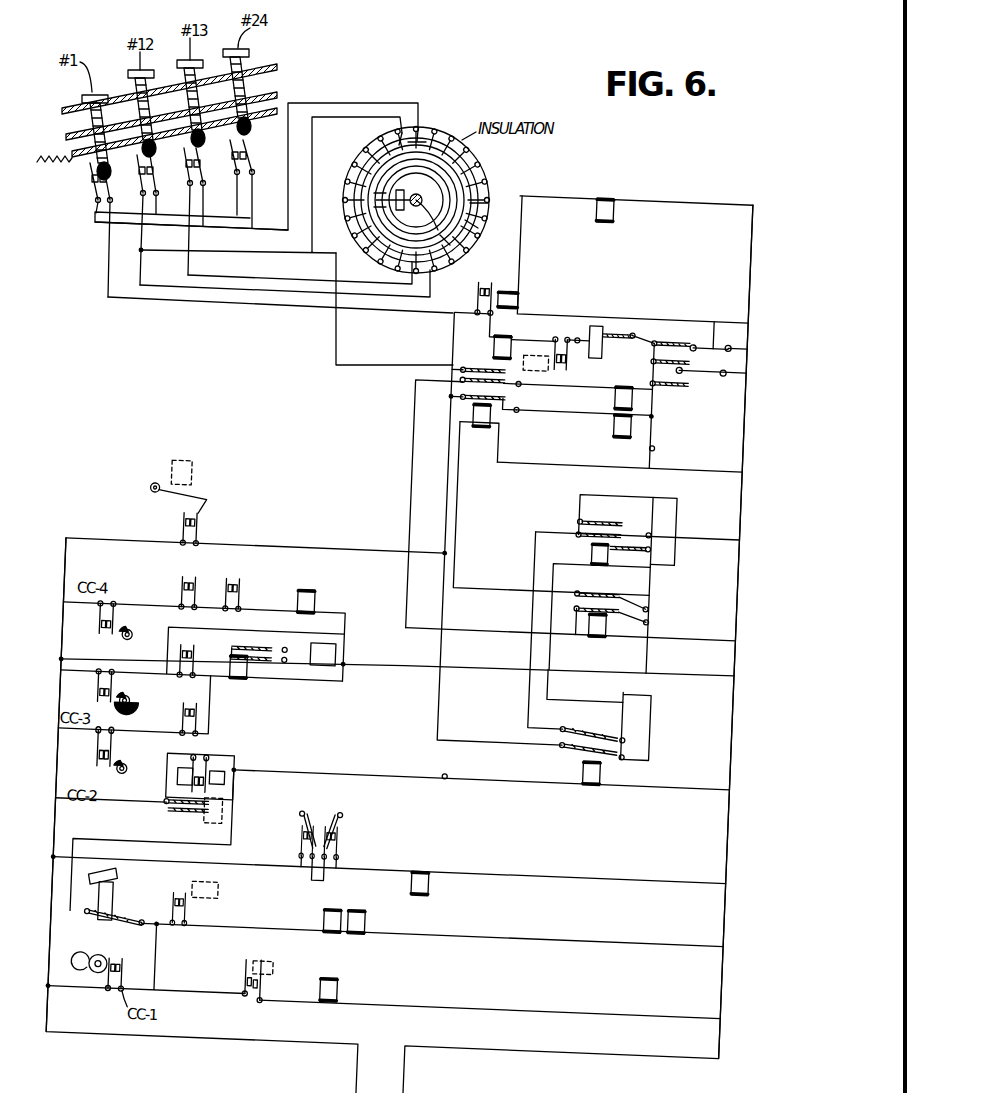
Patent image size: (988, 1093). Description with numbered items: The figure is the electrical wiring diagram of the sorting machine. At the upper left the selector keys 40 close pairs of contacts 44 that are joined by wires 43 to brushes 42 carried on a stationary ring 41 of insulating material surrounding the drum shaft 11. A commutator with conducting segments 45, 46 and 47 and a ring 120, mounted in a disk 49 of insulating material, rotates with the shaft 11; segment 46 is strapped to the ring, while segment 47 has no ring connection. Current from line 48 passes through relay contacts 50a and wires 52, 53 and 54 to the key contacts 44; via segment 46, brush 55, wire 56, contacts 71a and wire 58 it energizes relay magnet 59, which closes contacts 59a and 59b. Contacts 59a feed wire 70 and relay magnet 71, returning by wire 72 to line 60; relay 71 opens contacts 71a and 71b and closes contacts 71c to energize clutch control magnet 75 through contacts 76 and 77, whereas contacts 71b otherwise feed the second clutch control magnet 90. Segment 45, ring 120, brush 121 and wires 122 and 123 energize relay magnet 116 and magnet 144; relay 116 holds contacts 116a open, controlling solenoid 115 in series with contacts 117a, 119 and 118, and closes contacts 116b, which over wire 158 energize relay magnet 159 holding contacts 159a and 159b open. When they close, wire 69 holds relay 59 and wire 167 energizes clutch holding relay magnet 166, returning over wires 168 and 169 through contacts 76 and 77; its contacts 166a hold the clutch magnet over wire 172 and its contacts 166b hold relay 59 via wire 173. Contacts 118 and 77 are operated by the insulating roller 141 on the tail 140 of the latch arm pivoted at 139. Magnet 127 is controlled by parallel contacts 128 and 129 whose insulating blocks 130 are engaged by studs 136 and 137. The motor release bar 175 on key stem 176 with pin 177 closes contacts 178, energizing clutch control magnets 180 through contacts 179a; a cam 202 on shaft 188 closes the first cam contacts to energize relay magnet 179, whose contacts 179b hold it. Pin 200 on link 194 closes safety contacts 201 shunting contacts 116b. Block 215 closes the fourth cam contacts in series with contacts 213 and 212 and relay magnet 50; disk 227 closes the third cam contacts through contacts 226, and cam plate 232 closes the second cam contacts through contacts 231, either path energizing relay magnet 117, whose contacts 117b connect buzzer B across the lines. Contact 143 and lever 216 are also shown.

The drum shaft 11 is at (450, 245).
The selector key 40 is at (90, 118).
The ring of insulating material 41 is at (492, 170).
The brushes 42 is at (372, 152).
The wires 43 is at (358, 105).
The pairs of contacts 44 is at (90, 185).
The conducting segment 45 is at (440, 140).
The conducting segment 46 is at (352, 178).
The conducting segment 47 is at (488, 185).
The line 48 is at (66, 770).
The disk of insulating material 49 is at (411, 122).
The relay magnet 50 is at (190, 468).
The relay contacts 50a is at (199, 522).
The wire 52 is at (358, 538).
The wire 53 is at (445, 423).
The wire 54 is at (178, 300).
The brush 55 is at (388, 209).
The wire 56 is at (375, 365).
The wire 58 is at (409, 490).
The relay magnet 59 is at (595, 614).
The relay contacts 59a is at (648, 581).
The relay contacts 59b is at (650, 597).
The line 60 is at (739, 568).
The wire 69 is at (665, 673).
The wire 70 is at (455, 550).
The relay magnet 71 is at (475, 409).
The relay contacts 71a is at (486, 354).
The relay contacts 71b is at (520, 392).
The relay contacts 71c is at (505, 394).
The wire 72 is at (535, 446).
The clutch control magnet 75 is at (612, 414).
The contacts 76 is at (675, 360).
The contacts 77 is at (676, 338).
The second clutch control magnet 90 is at (626, 372).
The solenoid 115 is at (506, 325).
The relay magnet 116 is at (510, 282).
The relay contacts 116a is at (490, 262).
The relay contacts 116b is at (177, 808).
The relay magnet 117 is at (529, 353).
The relay contacts 117a is at (560, 356).
The relay contacts 117b is at (262, 640).
The contacts 118 is at (668, 320).
The contacts 119 is at (592, 310).
The ring 120 is at (478, 228).
The brush 121 is at (488, 205).
The wire 122 is at (506, 178).
The wire 123 is at (508, 230).
The magnet 127 is at (441, 866).
The pair of contacts 128 is at (312, 832).
The pair of contacts 129 is at (350, 832).
The blocks of insulating material 130 is at (318, 800).
The stud 136 is at (311, 806).
The stud 137 is at (353, 806).
The pivot 139 is at (720, 318).
The tail 140 is at (705, 296).
The insulating roller 141 is at (685, 320).
The contact arm 143 is at (714, 350).
The magnet 144 is at (600, 188).
The wire 158 is at (454, 764).
The relay magnet 159 is at (601, 765).
The relay contacts 159a is at (593, 709).
The relay contacts 159b is at (574, 732).
The clutch holding relay magnet 166 is at (590, 540).
The relay contacts 166a is at (620, 503).
The relay contacts 166b is at (620, 532).
The wire 167 is at (553, 668).
The wire 168 is at (676, 524).
The wire 169 is at (650, 426).
The wire 172 is at (698, 513).
The wire 173 is at (535, 684).
The motor release bar 175 is at (114, 874).
The key stem 176 is at (127, 887).
The pin 177 is at (562, 340).
The contacts 178 is at (135, 918).
The relay magnet 179 is at (214, 876).
The relay contacts 179a is at (192, 920).
The relay contacts 179b is at (270, 996).
The clutch control magnets 180 is at (348, 898).
The shaft 188 is at (125, 635).
The link 194 is at (220, 750).
The pin 200 is at (258, 765).
The safety contacts 201 is at (196, 780).
The cam 202 is at (110, 970).
The contacts 212 is at (242, 572).
The contacts 213 is at (182, 573).
The block of insulating material 215 is at (133, 628).
The lever 216 is at (160, 490).
The contacts 226 is at (192, 640).
The disk of insulating material 227 is at (135, 704).
The contacts 231 is at (190, 700).
The cam plate 232 is at (133, 764).
The buzzer B is at (348, 653).